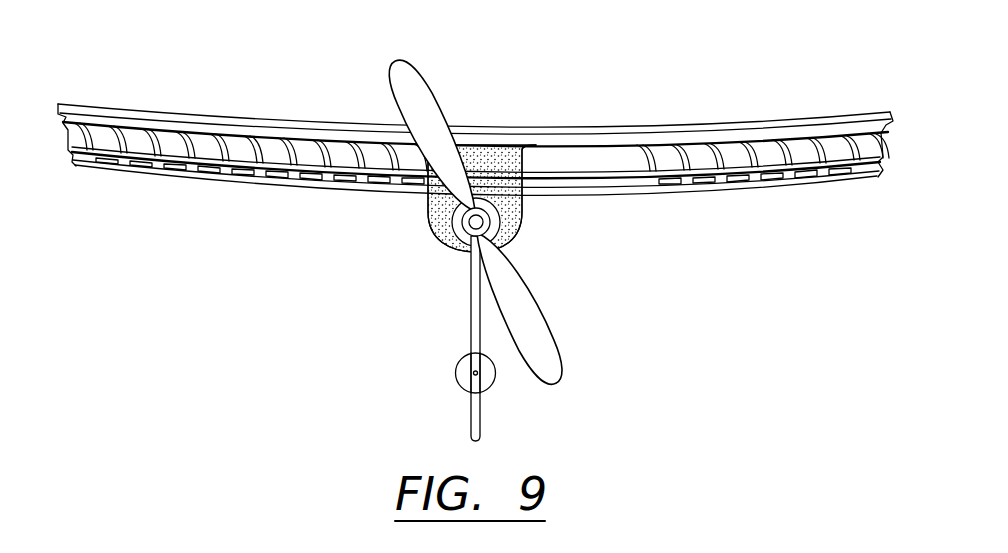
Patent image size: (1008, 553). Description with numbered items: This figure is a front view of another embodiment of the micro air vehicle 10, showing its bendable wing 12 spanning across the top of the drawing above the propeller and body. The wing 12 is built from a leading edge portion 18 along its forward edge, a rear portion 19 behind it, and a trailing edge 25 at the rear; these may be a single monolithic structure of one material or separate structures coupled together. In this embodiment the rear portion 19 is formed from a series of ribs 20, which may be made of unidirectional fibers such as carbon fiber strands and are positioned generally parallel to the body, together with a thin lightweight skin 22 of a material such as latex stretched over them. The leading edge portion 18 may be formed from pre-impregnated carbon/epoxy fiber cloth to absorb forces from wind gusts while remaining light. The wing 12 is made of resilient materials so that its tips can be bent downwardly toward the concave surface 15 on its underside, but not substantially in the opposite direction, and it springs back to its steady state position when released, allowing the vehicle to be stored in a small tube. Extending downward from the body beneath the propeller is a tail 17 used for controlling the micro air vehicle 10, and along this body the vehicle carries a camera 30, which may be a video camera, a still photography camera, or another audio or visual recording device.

The micro air vehicle 10 is at (569, 232).
The wing 12 is at (475, 186).
The concave surface 15 is at (688, 163).
The tail 17 is at (481, 414).
The leading edge portion 18 is at (830, 130).
The rear portion 19 is at (790, 150).
The ribs 20 is at (234, 145).
The skin 22 is at (193, 147).
The trailing edge 25 is at (720, 183).
The camera 30 is at (458, 374).